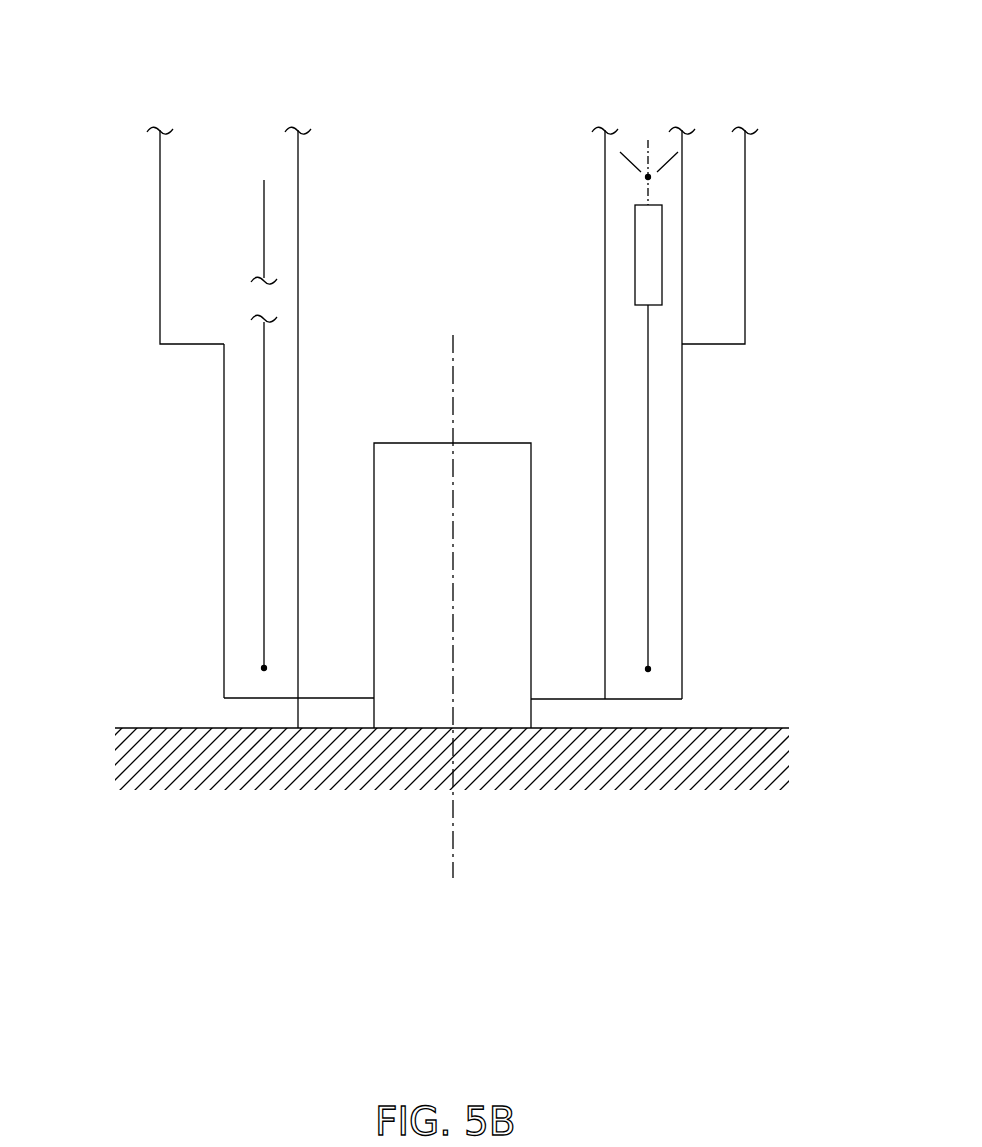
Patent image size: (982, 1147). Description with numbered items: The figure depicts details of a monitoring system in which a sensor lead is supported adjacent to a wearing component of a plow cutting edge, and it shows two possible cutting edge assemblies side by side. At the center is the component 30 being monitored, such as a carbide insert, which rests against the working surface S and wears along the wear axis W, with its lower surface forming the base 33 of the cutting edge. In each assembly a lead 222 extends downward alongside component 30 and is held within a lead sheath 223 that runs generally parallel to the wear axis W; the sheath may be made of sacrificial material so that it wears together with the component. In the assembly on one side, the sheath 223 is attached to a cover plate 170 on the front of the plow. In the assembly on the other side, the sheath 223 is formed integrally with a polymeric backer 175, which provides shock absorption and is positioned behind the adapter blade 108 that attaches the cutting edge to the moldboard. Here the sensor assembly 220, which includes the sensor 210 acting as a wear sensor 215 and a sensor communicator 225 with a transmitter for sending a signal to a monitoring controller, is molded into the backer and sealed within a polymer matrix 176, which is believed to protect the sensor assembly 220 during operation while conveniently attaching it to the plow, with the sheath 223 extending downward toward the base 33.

The cover plate 170 is at (150, 287).
The wear sensor 215 is at (262, 424).
The lead 222 is at (264, 505).
The lead sheath 223 is at (224, 583).
The base 33 is at (313, 698).
The component 30 is at (398, 735).
The surface S is at (720, 728).
The wear axis W is at (452, 860).
The adapter blade 108 is at (705, 250).
The polymeric backer 175 is at (688, 318).
The polymer matrix 176 is at (635, 268).
The sensor assembly 220 is at (628, 220).
The sensor 210 is at (652, 228).
The sensor communicator 225 is at (645, 132).